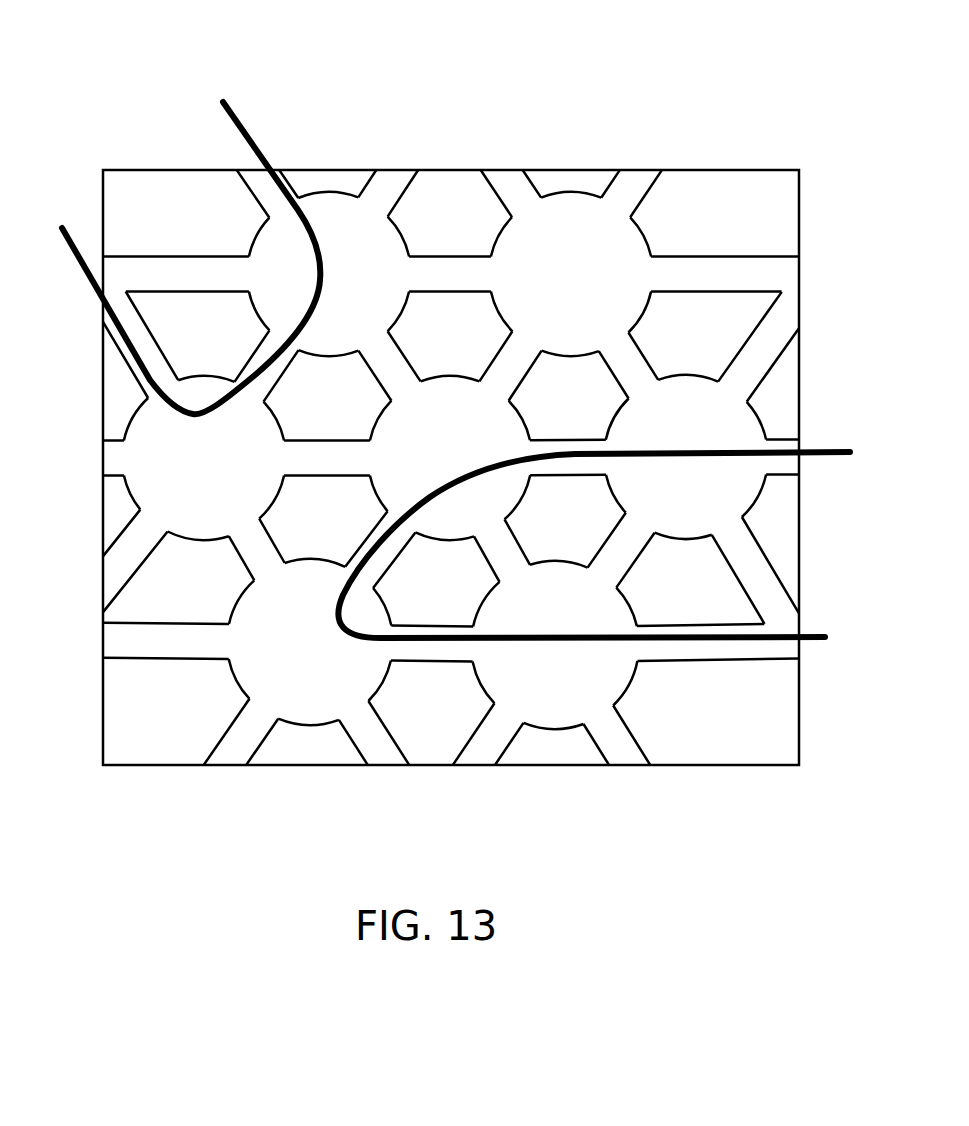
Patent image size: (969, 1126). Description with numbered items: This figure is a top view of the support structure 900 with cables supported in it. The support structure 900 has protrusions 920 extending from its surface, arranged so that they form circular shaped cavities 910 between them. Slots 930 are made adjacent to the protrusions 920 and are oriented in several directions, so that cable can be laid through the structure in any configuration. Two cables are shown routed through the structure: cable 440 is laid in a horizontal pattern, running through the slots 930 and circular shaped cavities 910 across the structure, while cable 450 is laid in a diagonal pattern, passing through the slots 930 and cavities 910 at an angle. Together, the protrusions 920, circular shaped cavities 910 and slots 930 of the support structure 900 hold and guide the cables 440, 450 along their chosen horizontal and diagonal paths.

The support structure 900 is at (430, 82).
The circular shaped cavities 910 is at (585, 284).
The protrusions 920 is at (472, 226).
The slots 930 is at (528, 178).
The cable 440 is at (836, 450).
The cable 450 is at (252, 132).